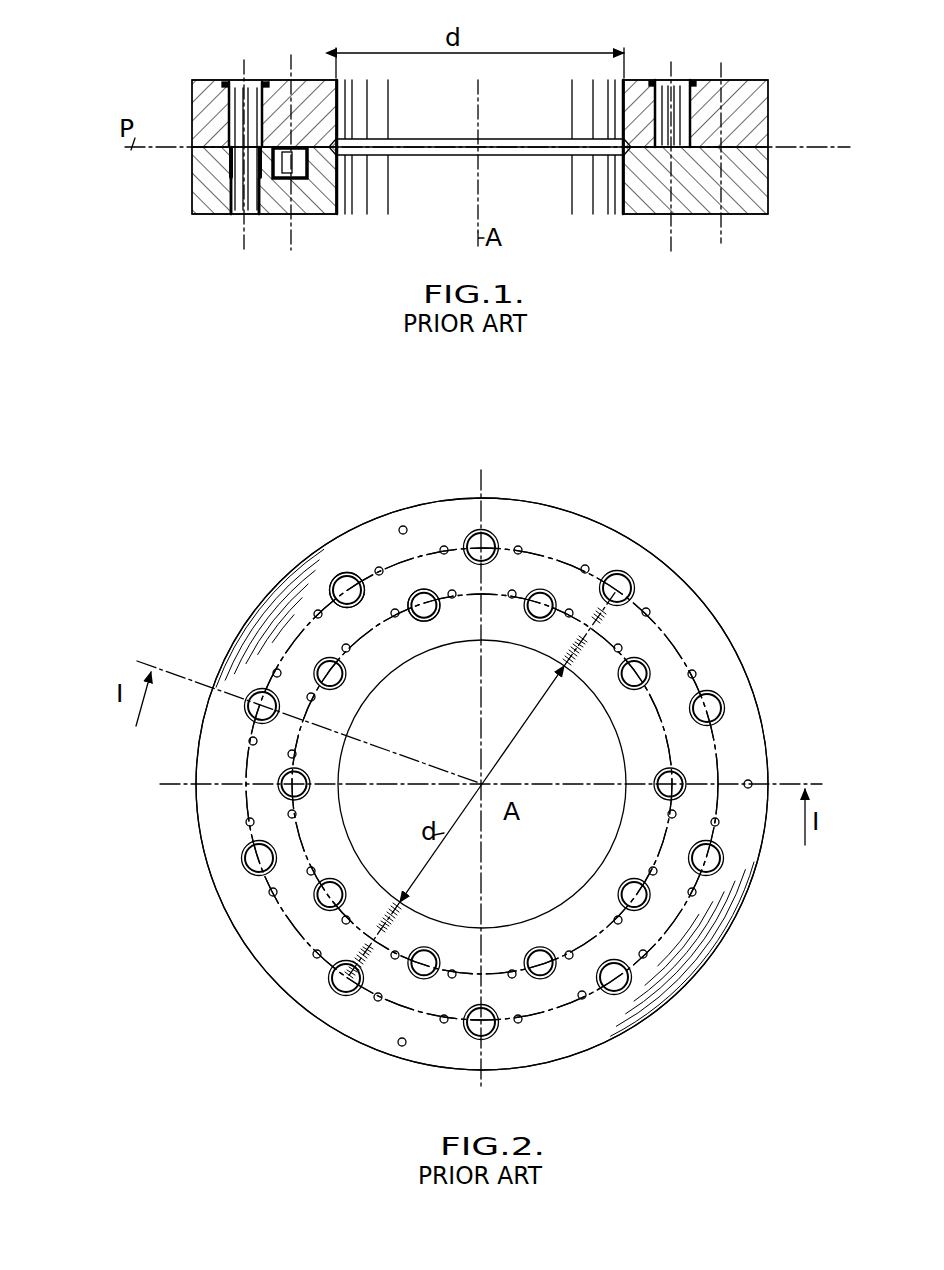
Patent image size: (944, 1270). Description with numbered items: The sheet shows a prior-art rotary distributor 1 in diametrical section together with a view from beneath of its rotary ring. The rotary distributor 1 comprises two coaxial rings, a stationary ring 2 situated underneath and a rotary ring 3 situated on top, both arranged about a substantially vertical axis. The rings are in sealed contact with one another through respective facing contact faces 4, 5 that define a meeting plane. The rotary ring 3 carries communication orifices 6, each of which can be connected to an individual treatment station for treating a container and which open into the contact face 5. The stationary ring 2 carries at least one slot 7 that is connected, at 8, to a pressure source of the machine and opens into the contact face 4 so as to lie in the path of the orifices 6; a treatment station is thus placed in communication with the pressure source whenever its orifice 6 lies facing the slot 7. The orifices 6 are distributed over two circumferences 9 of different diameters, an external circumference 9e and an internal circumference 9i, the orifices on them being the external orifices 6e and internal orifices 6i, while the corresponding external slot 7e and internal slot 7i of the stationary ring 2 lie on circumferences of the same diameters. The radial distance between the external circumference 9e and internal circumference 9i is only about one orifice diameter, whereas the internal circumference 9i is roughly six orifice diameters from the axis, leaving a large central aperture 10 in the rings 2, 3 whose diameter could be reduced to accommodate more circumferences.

In FIG. 1, the rotary distributor 1 is at (184, 65).
In FIG. 1, the stationary ring 2 is at (754, 209).
In FIG. 1, the rotary ring 3 is at (751, 85).
In FIG. 2, the rotary ring 3 is at (619, 527).
In FIG. 1, the contact face 4 is at (747, 195).
In FIG. 1, the contact face 5 is at (703, 149).
In FIG. 2, the contact face 5 is at (508, 522).
In FIG. 2, the communication orifices 6 is at (416, 591).
In FIG. 1, the external orifices 6e is at (249, 96).
In FIG. 2, the external orifices 6e is at (711, 690).
In FIG. 1, the internal orifices 6i is at (679, 102).
In FIG. 2, the internal orifices 6i is at (296, 766).
In FIG. 1, the slot 7 is at (139, 161).
In FIG. 1, the external slot 7e is at (238, 158).
In FIG. 1, the internal slot 7i is at (267, 171).
In FIG. 1, the connection to pressure source 8 is at (237, 183).
In FIG. 2, the circumferences 9 is at (175, 935).
In FIG. 1, the external circumference 9e is at (737, 242).
In FIG. 2, the external circumference 9e is at (285, 918).
In FIG. 1, the internal circumference 9i is at (291, 58).
In FIG. 2, the internal circumference 9i is at (350, 918).
In FIG. 1, the central aperture 10 is at (550, 203).
In FIG. 2, the central aperture 10 is at (593, 842).